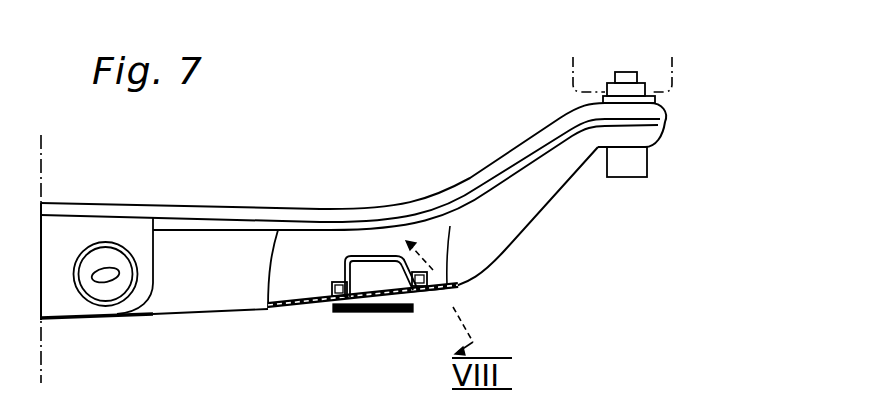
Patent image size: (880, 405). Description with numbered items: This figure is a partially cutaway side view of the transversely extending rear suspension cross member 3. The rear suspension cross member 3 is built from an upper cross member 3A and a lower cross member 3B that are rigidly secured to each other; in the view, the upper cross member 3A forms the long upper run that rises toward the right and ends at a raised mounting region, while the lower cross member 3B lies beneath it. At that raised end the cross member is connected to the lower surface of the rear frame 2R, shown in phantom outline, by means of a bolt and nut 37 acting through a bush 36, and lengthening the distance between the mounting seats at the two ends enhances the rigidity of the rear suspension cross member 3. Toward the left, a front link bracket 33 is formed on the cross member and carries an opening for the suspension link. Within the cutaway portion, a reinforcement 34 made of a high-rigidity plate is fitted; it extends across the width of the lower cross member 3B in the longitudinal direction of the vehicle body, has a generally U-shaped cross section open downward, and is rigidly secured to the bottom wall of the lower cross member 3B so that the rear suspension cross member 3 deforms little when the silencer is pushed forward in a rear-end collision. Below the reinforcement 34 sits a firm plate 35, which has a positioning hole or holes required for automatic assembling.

The rear frame 2R is at (672, 65).
The rear suspension cross member 3 is at (182, 204).
The upper cross member 3A is at (507, 168).
The lower cross member 3B is at (520, 217).
The front link bracket 33 is at (145, 263).
The reinforcement 34 is at (345, 262).
The firm plate 35 is at (358, 313).
The bush 36 is at (655, 98).
The bolt and nut 37 is at (630, 173).